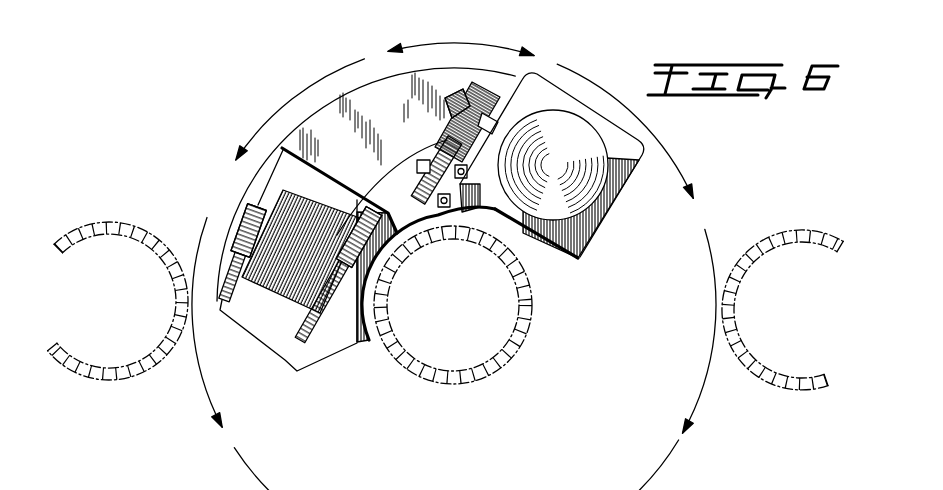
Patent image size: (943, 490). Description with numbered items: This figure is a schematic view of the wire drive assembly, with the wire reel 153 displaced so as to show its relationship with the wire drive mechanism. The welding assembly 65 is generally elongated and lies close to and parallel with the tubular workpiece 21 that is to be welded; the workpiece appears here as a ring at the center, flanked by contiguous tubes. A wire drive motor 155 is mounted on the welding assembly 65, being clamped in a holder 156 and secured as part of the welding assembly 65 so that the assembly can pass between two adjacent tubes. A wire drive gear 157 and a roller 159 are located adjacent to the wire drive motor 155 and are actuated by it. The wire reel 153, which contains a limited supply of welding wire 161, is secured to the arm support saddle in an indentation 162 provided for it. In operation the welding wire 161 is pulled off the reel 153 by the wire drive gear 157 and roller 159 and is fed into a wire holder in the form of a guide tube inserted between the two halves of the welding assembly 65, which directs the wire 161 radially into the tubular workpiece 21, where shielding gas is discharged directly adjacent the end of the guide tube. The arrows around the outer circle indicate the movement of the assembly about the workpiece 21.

The tubular workpiece 21 is at (437, 392).
The welding assembly 65 is at (573, 270).
The wire reel 153 is at (289, 358).
The wire drive motor 155 is at (545, 121).
The holder 156 is at (598, 245).
The wire drive gear 157 is at (492, 84).
The roller 159 is at (424, 212).
The welding wire 161 is at (397, 162).
The indentation 162 is at (275, 178).